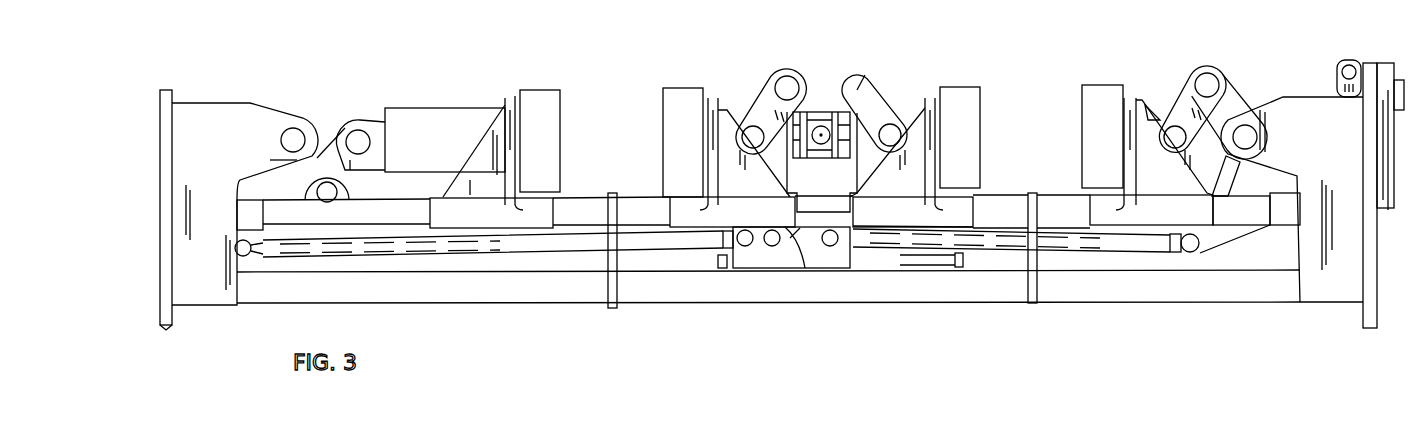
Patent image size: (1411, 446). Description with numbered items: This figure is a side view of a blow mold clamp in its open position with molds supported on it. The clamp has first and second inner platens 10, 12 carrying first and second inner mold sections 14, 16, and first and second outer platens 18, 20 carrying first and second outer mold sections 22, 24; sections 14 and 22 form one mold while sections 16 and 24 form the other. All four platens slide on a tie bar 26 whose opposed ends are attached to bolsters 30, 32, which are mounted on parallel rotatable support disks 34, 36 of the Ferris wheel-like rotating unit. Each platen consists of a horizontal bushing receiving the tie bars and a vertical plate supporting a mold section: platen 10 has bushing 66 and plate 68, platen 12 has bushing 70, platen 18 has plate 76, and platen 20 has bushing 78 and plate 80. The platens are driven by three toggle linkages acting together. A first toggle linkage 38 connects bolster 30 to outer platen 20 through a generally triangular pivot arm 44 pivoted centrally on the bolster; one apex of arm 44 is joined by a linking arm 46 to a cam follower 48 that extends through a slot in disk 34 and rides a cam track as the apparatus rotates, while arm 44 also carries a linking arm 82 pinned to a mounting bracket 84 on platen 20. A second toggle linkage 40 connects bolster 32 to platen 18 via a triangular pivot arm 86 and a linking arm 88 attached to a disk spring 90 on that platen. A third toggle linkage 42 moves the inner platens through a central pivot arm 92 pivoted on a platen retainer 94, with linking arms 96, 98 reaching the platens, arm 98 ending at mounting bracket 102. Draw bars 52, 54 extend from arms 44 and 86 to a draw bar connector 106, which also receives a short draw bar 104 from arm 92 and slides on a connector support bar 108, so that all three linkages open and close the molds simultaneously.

The first inner platen 10 is at (729, 191).
The second inner platen 12 is at (884, 191).
The first inner mold section 14 is at (697, 141).
The second inner mold section 16 is at (973, 141).
The first outer platen 18 is at (467, 198).
The second outer platen 20 is at (1150, 193).
The first outer mold section 22 is at (526, 141).
The second outer mold section 24 is at (1089, 141).
The tie bar 26 is at (585, 208).
The bolster 30 is at (1299, 143).
The bolster 32 is at (192, 149).
The rotatable support disk 34 is at (1362, 320).
The rotatable support disk 36 is at (160, 312).
The first toggle linkage 38 is at (1218, 55).
The second toggle linkage 40 is at (323, 118).
The third toggle linkage 42 is at (880, 60).
The pivot arm 44 is at (1237, 100).
The linking arm 46 is at (1337, 90).
The cam follower 48 is at (1403, 87).
The draw bar 52 is at (1125, 245).
The draw bar 54 is at (552, 250).
The bushing 66 is at (680, 208).
The plate 68 is at (713, 107).
The bushing 70 is at (972, 197).
The plate 76 is at (505, 100).
The bushing 78 is at (1100, 203).
The plate 80 is at (1137, 107).
The linking arm 82 is at (1193, 73).
The mounting bracket 84 is at (1153, 117).
The pivot arm 86 is at (306, 117).
The linking arm 88 is at (338, 130).
The disk spring 90 is at (418, 153).
The central pivot arm 92 is at (845, 106).
The platen retainer 94 is at (808, 191).
The linking arm 96 is at (888, 122).
The linking arm 98 is at (777, 70).
The mounting bracket 102 is at (733, 117).
The short draw bar 104 is at (805, 230).
The draw bar connector 106 is at (783, 262).
The connector support bar 108 is at (912, 262).